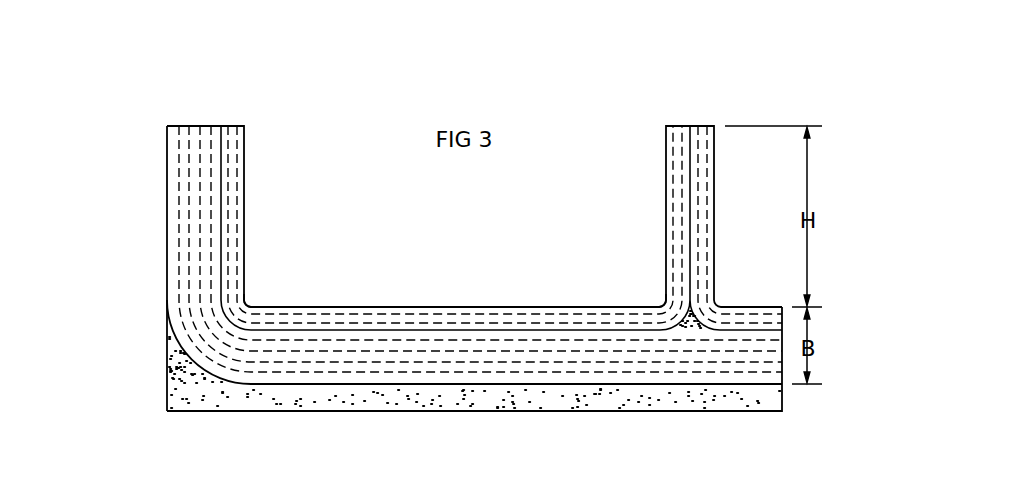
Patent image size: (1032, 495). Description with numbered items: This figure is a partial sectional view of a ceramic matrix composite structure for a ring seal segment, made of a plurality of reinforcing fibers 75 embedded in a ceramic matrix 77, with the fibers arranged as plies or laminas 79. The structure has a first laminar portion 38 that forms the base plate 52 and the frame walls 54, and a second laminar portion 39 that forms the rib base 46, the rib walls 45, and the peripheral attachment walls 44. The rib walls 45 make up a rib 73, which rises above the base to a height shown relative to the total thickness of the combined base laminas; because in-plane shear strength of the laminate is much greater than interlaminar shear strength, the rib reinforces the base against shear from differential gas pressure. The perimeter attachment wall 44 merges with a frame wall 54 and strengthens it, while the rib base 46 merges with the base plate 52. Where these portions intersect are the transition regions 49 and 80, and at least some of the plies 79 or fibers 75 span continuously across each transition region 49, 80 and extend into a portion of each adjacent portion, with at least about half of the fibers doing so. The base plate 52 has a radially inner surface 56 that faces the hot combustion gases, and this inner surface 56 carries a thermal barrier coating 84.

The first laminar portion 38 is at (503, 358).
The second laminar portion 39 is at (503, 322).
The perimeter attachment wall 44 is at (244, 231).
The rib wall 45 is at (714, 232).
The rib base 46 is at (449, 306).
The transition region 49 is at (672, 312).
The base plate 52 is at (452, 387).
The frame wall 54 is at (167, 229).
The inner surface 56 is at (550, 412).
The rib 73 is at (684, 98).
The reinforcing fiber 75 is at (190, 325).
The ceramic matrix 77 is at (183, 269).
The ply 79 is at (237, 174).
The transition region 80 is at (212, 347).
The thermal barrier coating 84 is at (397, 400).